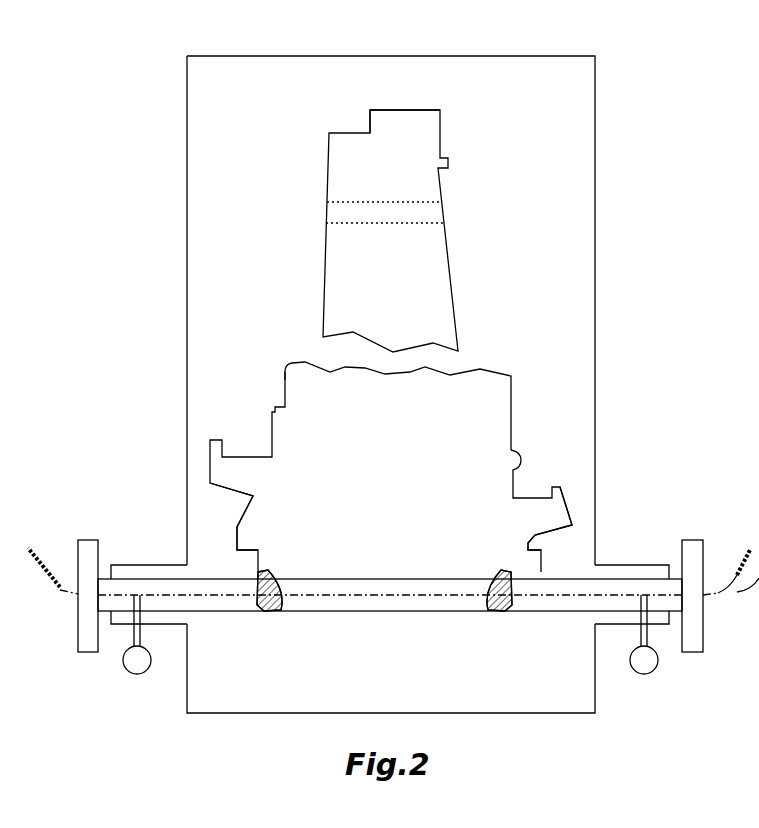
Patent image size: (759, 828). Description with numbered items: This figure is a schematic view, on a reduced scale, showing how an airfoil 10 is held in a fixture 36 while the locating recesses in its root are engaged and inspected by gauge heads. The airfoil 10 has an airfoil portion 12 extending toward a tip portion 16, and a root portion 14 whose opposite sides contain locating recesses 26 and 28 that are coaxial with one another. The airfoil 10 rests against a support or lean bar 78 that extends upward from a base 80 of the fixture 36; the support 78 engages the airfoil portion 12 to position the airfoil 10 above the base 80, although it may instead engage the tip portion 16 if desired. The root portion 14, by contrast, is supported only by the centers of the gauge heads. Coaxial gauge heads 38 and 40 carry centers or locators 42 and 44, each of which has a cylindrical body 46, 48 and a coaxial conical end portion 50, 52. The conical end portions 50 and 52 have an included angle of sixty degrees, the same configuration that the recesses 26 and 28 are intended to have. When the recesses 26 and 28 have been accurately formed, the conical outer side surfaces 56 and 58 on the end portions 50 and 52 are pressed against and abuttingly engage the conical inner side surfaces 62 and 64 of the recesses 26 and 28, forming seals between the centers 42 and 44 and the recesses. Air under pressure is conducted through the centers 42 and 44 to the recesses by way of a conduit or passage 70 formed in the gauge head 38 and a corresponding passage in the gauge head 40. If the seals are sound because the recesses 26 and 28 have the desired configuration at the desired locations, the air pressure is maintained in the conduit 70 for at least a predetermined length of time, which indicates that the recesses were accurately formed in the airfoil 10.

The airfoil 10 is at (452, 268).
The airfoil portion 12 is at (418, 327).
The root portion 14 is at (303, 600).
The tip portion 16 is at (410, 110).
The locating recess 26 is at (265, 610).
The locating recess 28 is at (492, 613).
The fixture 36 is at (186, 235).
The gauge head 38 is at (118, 485).
The gauge head 40 is at (670, 494).
The center or locator 42 is at (153, 587).
The center or locator 44 is at (613, 587).
The cylindrical body 46 is at (118, 587).
The cylindrical body 48 is at (653, 585).
The conical end portion 50 is at (255, 545).
The conical end portion 52 is at (518, 575).
The conical outer side surface 56 is at (258, 612).
The conical outer side surface 58 is at (500, 612).
The conical inner side surface 62 is at (278, 585).
The conical inner side surface 64 is at (490, 585).
The conduit or passage 70 is at (42, 571).
The support or lean bar 78 is at (360, 223).
The base 80 is at (482, 102).